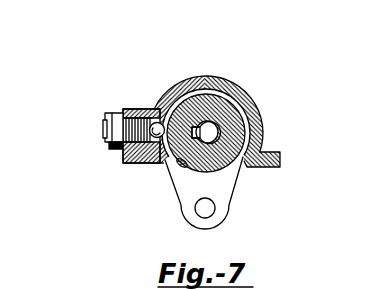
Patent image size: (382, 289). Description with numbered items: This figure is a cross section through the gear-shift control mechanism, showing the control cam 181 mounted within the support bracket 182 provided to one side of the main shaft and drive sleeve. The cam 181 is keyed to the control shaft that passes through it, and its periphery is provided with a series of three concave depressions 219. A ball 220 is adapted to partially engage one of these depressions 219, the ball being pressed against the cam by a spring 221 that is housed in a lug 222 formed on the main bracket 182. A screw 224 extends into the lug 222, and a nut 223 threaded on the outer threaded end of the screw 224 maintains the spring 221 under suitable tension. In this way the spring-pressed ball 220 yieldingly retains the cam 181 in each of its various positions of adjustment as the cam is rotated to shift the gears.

The control cam 181 is at (200, 100).
The support bracket 182 is at (263, 118).
The concave depressions 219 is at (170, 92).
The ball 220 is at (160, 115).
The spring 221 is at (156, 108).
The lug 222 is at (141, 164).
The nut 223 is at (113, 148).
The screw 224 is at (104, 128).